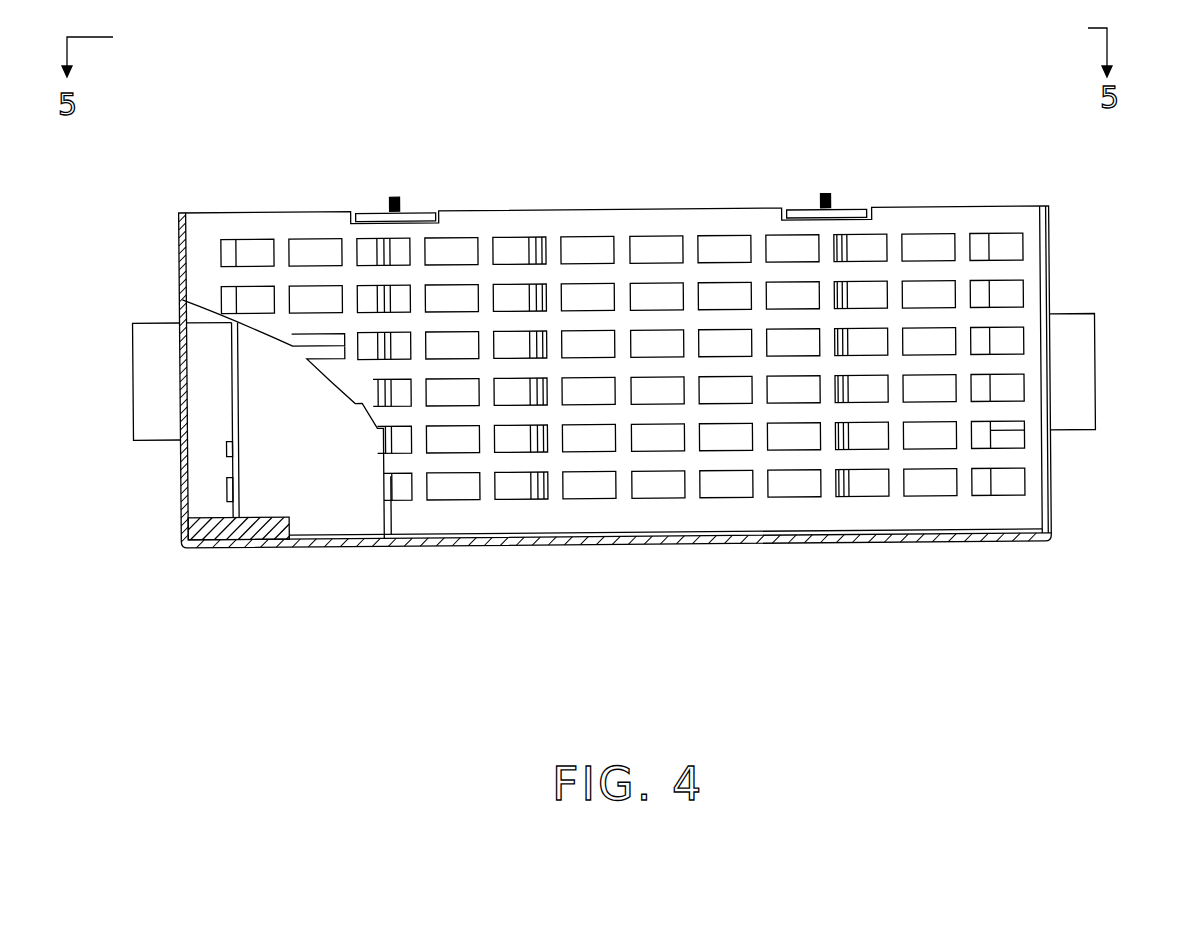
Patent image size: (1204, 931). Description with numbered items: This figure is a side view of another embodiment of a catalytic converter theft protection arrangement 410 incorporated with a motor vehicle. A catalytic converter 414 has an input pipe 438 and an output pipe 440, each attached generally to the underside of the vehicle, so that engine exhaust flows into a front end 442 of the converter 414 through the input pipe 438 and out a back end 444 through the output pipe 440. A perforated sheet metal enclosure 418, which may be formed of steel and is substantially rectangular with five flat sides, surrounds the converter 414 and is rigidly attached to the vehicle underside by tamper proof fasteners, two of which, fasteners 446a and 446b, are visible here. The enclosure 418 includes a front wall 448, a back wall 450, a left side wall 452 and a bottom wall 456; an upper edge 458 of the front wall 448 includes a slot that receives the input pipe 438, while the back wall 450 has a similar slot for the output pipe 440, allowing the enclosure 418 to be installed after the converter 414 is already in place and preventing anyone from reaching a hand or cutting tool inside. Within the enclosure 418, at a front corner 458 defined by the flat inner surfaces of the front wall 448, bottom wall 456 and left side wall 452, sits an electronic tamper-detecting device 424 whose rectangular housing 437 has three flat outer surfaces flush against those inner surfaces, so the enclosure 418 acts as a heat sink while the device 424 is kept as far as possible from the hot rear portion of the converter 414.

The catalytic converter theft protection arrangement 410 is at (374, 718).
The catalytic converter 414 is at (353, 505).
The perforated sheet metal enclosure 418 is at (862, 548).
The electronic tamper-detecting device 424 is at (214, 554).
The housing 437 is at (262, 547).
The input pipe 438 is at (158, 360).
The output pipe 440 is at (1068, 335).
The front end 442 is at (233, 380).
The back end 444 is at (1052, 490).
The tamper proof fastener 446a is at (385, 194).
The tamper proof fastener 446b is at (815, 197).
The front wall 448 is at (185, 462).
The back wall 450 is at (1050, 467).
The left side wall 452 is at (617, 522).
The bottom wall 456 is at (778, 540).
The front corner 458 is at (183, 213).